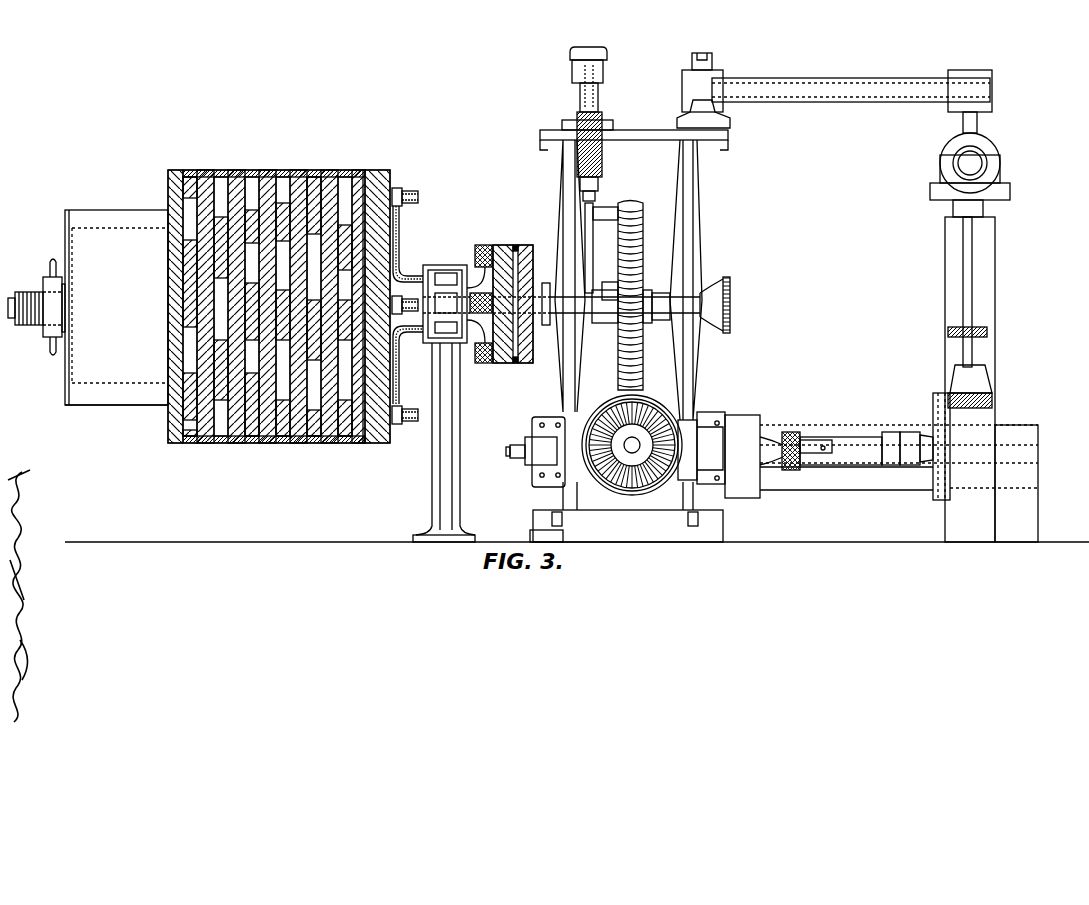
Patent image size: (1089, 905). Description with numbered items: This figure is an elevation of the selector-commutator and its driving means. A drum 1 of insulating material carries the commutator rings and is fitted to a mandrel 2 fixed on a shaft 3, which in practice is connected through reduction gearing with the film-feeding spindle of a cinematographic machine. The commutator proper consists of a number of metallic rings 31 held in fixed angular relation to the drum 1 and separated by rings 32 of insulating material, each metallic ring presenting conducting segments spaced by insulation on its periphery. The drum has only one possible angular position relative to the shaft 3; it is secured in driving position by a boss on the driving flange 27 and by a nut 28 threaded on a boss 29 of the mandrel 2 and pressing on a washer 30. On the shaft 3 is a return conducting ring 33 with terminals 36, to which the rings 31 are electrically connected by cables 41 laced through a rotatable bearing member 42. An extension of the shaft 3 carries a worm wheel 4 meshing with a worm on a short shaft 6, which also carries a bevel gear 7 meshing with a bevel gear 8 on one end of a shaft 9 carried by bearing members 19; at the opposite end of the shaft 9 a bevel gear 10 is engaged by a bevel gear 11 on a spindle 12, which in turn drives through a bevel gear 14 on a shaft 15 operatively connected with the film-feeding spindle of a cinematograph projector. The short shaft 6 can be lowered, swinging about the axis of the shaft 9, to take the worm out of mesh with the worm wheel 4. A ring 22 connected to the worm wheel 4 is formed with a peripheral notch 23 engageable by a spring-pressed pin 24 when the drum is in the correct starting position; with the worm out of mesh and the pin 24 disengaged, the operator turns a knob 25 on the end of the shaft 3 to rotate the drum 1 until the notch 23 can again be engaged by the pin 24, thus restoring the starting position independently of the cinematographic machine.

The drum 1 is at (116, 196).
The mandrel 2 is at (72, 372).
The shaft 3 is at (482, 348).
The worm wheel 4 is at (636, 204).
The short shaft 6 is at (572, 478).
The bevel gear 7 is at (603, 512).
The bevel gear 8 is at (685, 422).
The shaft 9 is at (780, 437).
The bevel gear 10 is at (948, 470).
The bevel gear 11 is at (992, 403).
The spindle 12 is at (962, 350).
The bevel gear 14 is at (943, 152).
The shaft 15 is at (960, 165).
The bearing members 19 is at (540, 440).
The ring 22 is at (590, 285).
The peripheral notch 23 is at (570, 203).
The spring-pressed pin 24 is at (596, 197).
The knob 25 is at (731, 303).
The driving flange 27 is at (372, 444).
The nut 28 is at (48, 343).
The boss 29 is at (34, 290).
The washer 30 is at (66, 386).
The metallic rings 31 is at (349, 443).
The rings of insulating material 32 is at (360, 170).
The return conducting ring 33 is at (518, 364).
The terminals 36 is at (478, 253).
The cable 41 is at (400, 233).
The rotatable bearing member 42 is at (440, 259).